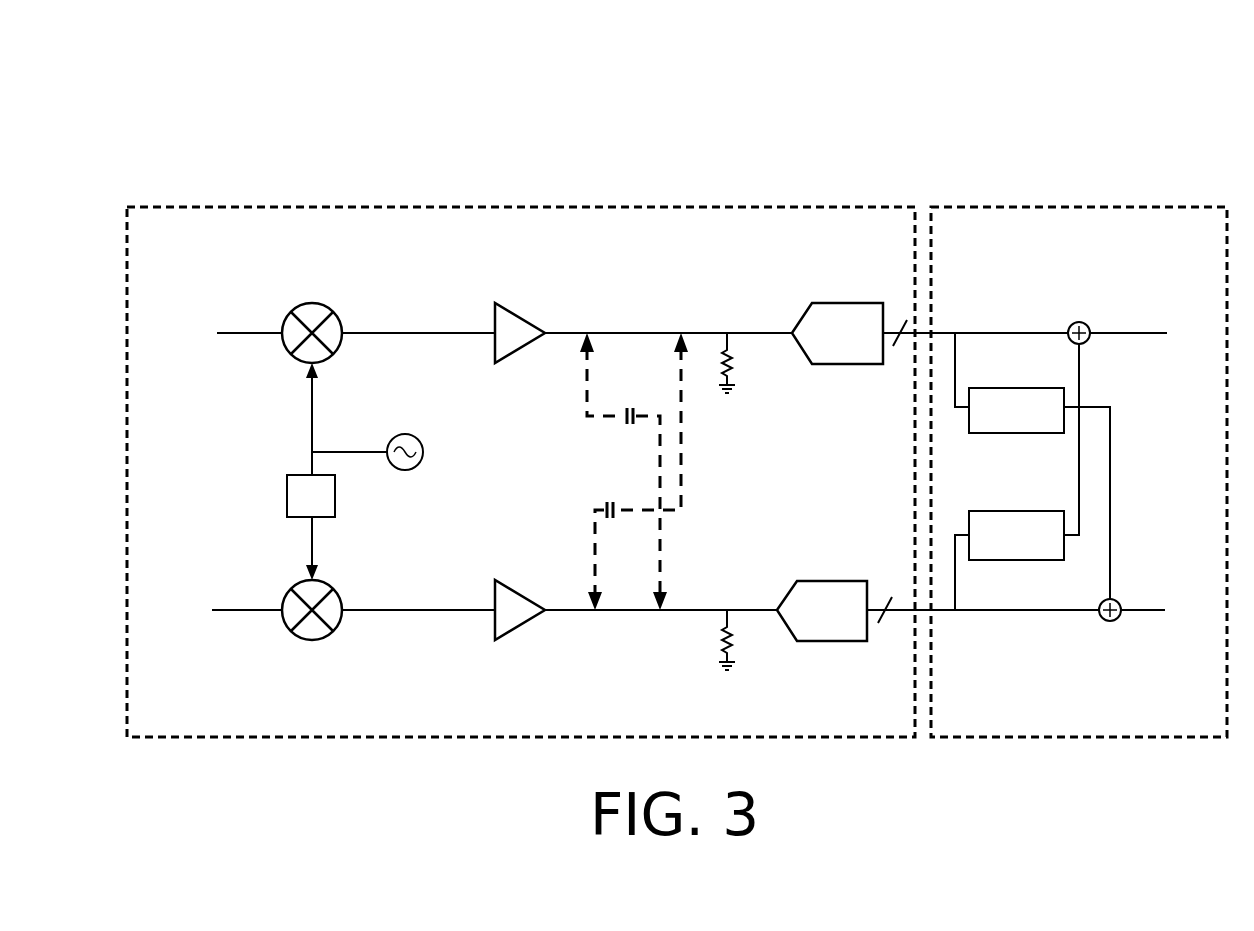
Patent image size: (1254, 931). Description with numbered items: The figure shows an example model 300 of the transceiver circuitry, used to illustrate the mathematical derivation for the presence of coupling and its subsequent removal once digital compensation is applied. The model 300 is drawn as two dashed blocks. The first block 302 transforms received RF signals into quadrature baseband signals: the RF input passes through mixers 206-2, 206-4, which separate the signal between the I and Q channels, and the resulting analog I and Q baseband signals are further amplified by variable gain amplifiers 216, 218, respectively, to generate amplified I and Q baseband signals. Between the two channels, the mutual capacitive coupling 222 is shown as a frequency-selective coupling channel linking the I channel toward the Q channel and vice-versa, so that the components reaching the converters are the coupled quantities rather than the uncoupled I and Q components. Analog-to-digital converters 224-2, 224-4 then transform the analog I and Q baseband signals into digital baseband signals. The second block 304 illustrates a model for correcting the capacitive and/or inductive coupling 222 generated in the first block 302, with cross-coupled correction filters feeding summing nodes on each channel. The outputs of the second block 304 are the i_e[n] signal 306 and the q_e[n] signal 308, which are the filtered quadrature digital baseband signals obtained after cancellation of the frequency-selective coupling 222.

The model 300 is at (157, 82).
The first block 302 is at (250, 207).
The second block 304 is at (1032, 207).
The mixer 206-2 is at (292, 311).
The mixer 206-4 is at (292, 631).
The variable gain amplifier 216 is at (495, 303).
The variable gain amplifier 218 is at (495, 640).
The capacitive and/or inductive coupling 222 is at (800, 432).
The ADC 224-2 is at (812, 303).
The ADC 224-4 is at (822, 641).
The i_e[n] signal 306 is at (1144, 349).
The q_e[n] signal 308 is at (1162, 631).